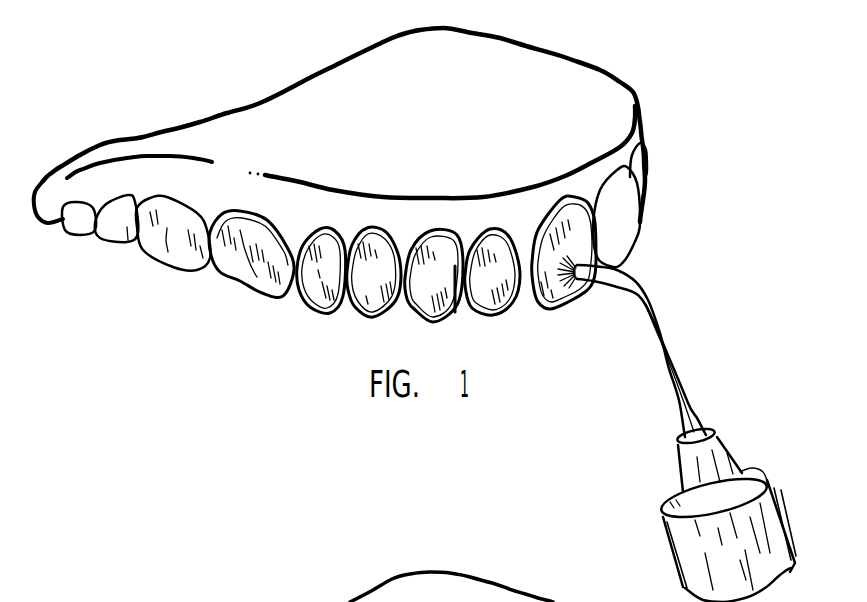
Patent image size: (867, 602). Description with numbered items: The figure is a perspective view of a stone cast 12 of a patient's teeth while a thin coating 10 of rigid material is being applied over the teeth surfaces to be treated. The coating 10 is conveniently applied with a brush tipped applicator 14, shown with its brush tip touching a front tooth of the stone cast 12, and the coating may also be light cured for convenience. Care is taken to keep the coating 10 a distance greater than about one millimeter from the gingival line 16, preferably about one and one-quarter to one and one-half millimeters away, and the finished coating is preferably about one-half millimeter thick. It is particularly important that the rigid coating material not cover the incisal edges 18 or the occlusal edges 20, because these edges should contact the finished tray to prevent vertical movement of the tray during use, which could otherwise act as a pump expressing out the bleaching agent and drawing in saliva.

The coating 10 is at (563, 306).
The stone cast 12 is at (533, 87).
The brush tipped applicator 14 is at (647, 297).
The gingival line 16 is at (273, 193).
The incisal edges 18 is at (581, 292).
The occlusal edges 20 is at (235, 283).